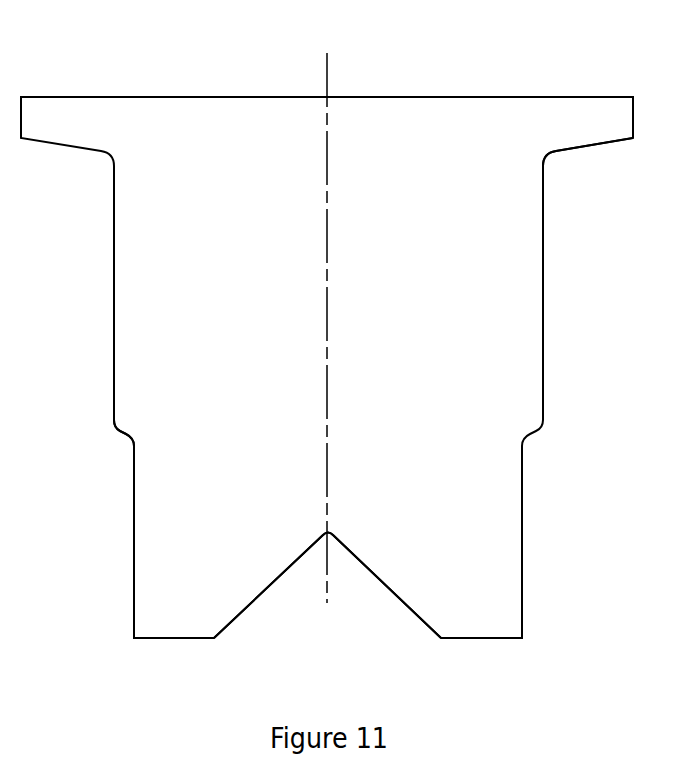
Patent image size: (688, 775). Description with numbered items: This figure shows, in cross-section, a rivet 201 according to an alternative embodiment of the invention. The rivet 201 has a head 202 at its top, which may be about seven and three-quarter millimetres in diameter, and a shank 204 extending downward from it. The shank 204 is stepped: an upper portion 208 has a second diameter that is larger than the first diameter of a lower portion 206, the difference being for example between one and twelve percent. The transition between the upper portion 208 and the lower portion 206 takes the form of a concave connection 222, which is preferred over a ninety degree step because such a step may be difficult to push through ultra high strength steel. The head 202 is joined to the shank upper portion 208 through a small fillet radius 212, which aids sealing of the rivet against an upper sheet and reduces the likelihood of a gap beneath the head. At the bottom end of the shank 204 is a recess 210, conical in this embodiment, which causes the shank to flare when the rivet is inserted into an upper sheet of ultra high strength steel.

The rivet 201 is at (405, 153).
The head 202 is at (577, 128).
The shank 204 is at (488, 351).
The lower portion 206 is at (488, 566).
The upper portion 208 is at (488, 261).
The recess 210 is at (285, 600).
The fillet radius 212 is at (547, 156).
The concave connection 222 is at (126, 433).